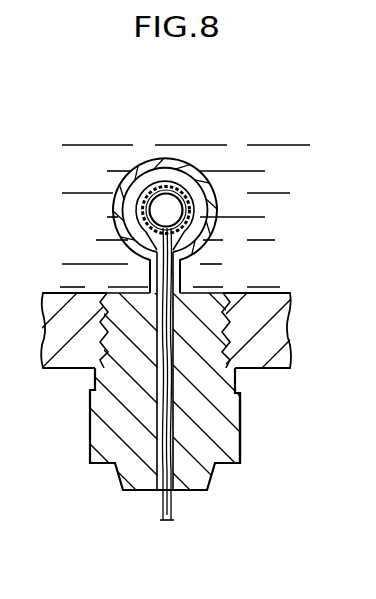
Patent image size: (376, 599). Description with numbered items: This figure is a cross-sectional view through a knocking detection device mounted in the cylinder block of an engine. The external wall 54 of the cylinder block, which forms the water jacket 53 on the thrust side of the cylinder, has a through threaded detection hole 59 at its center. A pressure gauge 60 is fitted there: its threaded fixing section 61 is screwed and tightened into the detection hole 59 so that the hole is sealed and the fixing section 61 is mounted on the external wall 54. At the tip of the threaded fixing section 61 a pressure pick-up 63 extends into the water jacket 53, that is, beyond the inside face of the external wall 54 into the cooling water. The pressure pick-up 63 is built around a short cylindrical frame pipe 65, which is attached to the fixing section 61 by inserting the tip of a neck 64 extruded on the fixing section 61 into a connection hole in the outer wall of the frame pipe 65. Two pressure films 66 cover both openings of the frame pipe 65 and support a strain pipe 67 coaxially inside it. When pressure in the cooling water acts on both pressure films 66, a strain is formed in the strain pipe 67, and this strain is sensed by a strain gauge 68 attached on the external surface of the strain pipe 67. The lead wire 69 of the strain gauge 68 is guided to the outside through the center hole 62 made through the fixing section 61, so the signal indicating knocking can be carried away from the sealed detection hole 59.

The water jacket 53 is at (105, 257).
The external wall 54 is at (47, 368).
The detection hole 59 is at (99, 368).
The pressure gauge 60 is at (225, 486).
The threaded fixing section 61 is at (240, 415).
The center hole 62 is at (158, 478).
The pressure pick-up 63 is at (175, 158).
The neck 64 is at (180, 273).
The frame pipe 65 is at (193, 203).
The pressure film 66 is at (190, 217).
The strain pipe 67 is at (182, 190).
The strain gauge 68 is at (186, 189).
The lead wire 69 is at (130, 218).